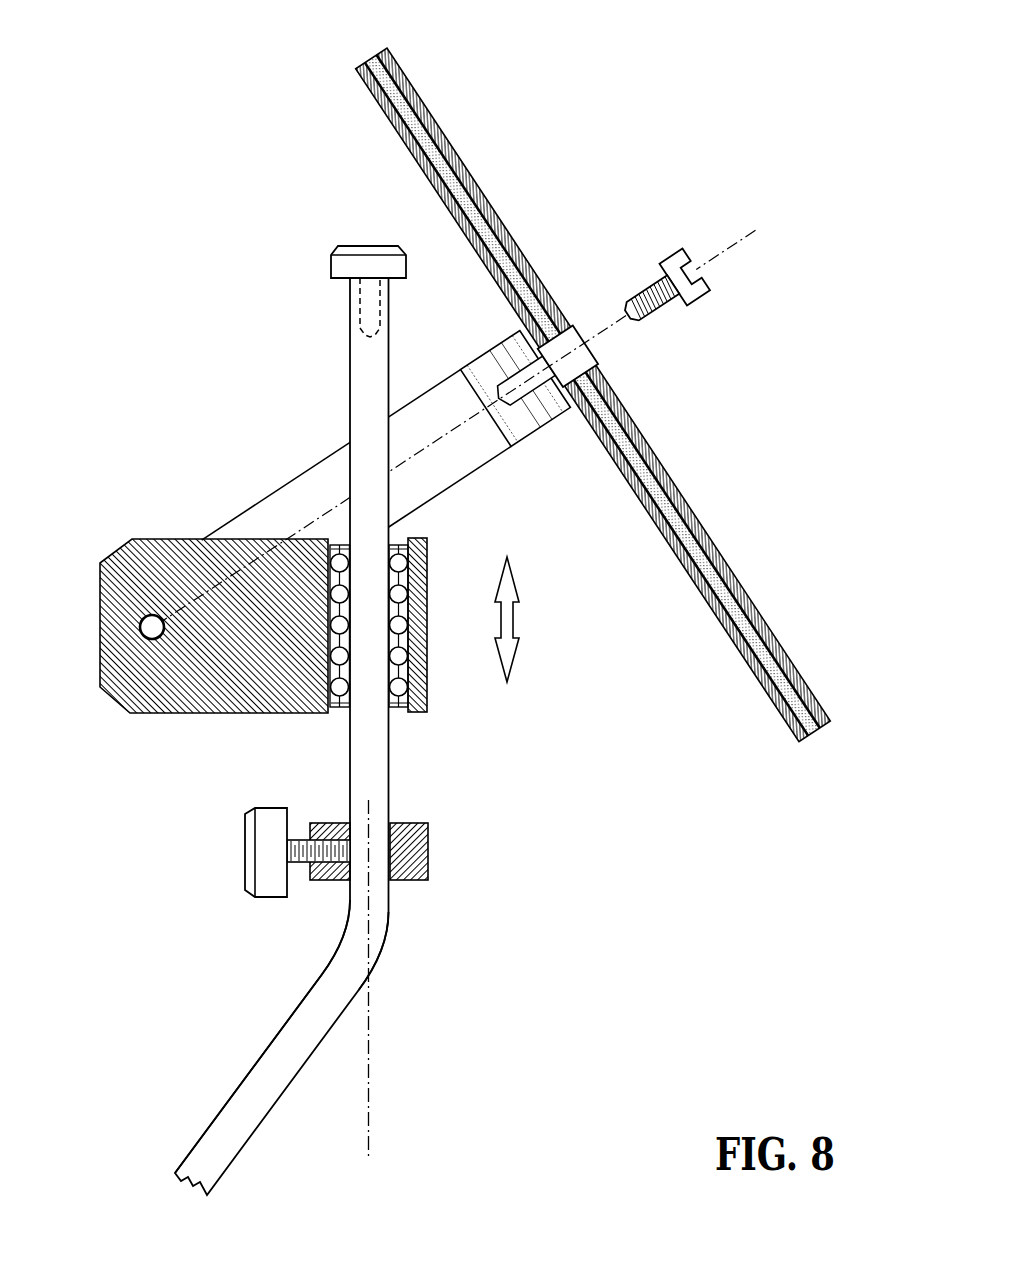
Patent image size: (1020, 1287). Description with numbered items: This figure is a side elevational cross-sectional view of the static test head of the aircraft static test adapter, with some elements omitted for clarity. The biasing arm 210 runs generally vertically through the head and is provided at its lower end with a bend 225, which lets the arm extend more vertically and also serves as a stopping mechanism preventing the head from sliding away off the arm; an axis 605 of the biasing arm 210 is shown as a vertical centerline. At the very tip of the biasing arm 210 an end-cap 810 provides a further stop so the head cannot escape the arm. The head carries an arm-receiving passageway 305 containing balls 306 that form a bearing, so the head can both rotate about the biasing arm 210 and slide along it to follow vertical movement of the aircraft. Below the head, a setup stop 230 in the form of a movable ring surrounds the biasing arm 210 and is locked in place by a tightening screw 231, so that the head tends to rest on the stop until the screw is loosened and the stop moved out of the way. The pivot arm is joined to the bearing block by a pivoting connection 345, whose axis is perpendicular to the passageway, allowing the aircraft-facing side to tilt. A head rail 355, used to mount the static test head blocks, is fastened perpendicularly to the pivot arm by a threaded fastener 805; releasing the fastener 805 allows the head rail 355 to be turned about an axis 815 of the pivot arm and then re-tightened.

The biasing arm 210 is at (351, 358).
The bend 225 is at (383, 953).
The setup stop 230 is at (430, 852).
The tightening screw 231 is at (270, 897).
The arm-receiving passageway 305 is at (336, 714).
The balls 306 is at (401, 625).
The pivoting connection 345 is at (141, 630).
The head rail 355 is at (197, 713).
The axis of the biasing arm 605 is at (370, 1115).
The threaded fastener 805 is at (669, 259).
The end-cap 810 is at (355, 245).
The axis of the pivot arm 815 is at (738, 242).